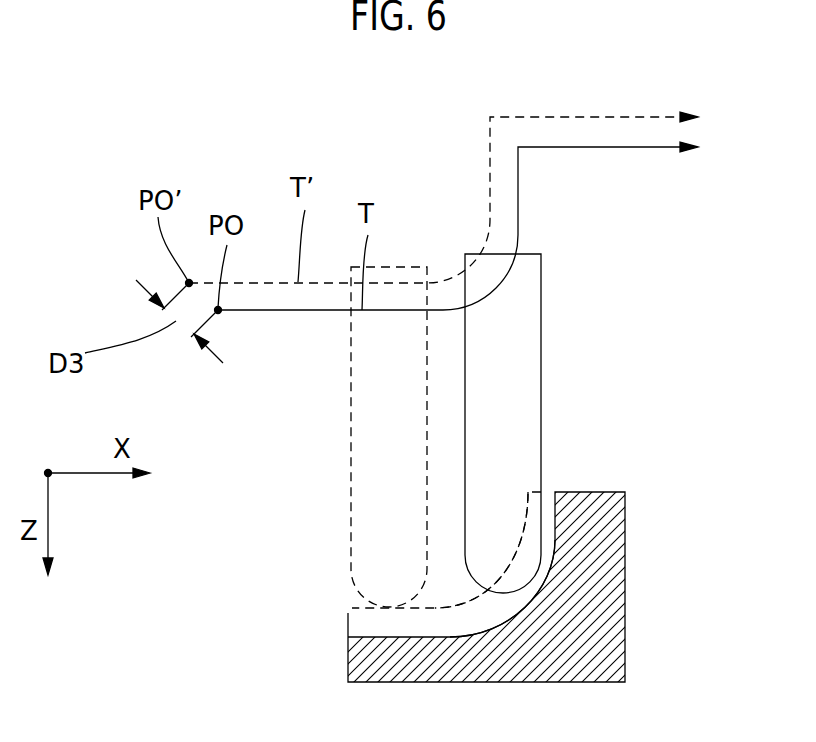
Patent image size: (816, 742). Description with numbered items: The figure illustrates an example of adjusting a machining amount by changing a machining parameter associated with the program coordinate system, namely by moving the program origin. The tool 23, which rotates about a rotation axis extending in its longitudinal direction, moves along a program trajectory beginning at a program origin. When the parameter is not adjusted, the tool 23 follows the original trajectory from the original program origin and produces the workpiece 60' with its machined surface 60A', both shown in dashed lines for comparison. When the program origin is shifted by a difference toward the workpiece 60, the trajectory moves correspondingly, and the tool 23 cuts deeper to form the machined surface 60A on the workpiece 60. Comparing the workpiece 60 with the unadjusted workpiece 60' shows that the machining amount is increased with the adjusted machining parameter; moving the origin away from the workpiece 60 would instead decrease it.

The tool 23 is at (541, 380).
The workpiece 60 is at (558, 564).
The machined surface 60A is at (501, 630).
The workpiece 60' is at (387, 554).
The machined surface 60A' is at (393, 550).